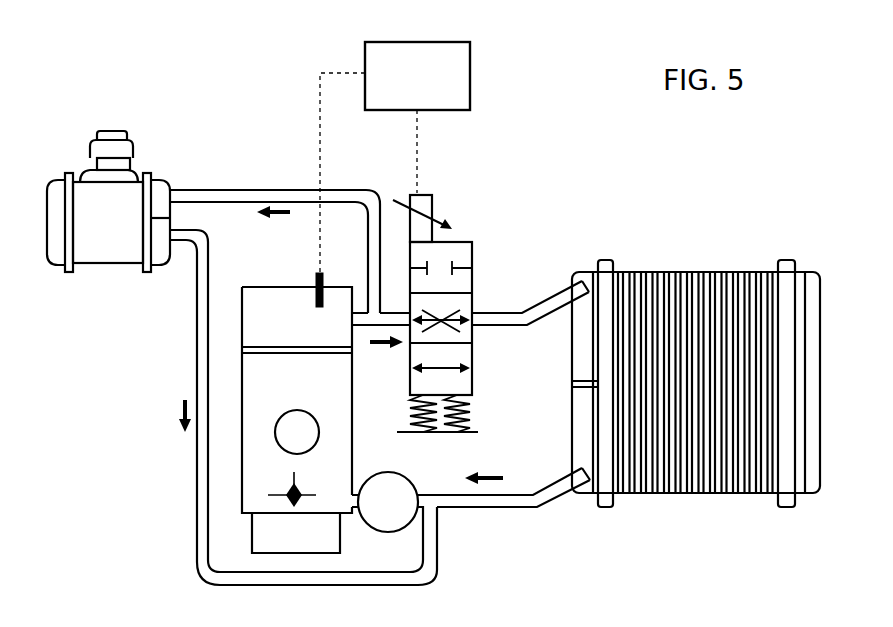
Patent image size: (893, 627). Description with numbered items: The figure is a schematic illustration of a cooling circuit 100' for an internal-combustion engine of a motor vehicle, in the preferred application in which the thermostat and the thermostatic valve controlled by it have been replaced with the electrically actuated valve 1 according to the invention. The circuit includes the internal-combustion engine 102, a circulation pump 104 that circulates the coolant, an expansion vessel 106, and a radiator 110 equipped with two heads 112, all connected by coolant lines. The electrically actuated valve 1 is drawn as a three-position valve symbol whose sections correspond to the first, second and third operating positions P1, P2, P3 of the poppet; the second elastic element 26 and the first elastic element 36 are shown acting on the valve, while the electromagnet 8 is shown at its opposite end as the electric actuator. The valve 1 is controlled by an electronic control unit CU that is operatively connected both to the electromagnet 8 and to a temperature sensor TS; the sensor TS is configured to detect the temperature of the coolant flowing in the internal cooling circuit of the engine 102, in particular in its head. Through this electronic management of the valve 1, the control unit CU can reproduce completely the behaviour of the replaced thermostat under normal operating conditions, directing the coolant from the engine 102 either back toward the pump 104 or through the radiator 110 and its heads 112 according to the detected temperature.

The cooling circuit 100' is at (558, 108).
The electrically actuated valve 1 is at (476, 306).
The electromagnet 8 is at (420, 196).
The second elastic element 26 is at (410, 414).
The first elastic element 36 is at (470, 412).
The internal-combustion engine 102 is at (312, 399).
The circulation pump 104 is at (378, 500).
The expansion vessel 106 is at (80, 172).
The radiator 110 is at (665, 318).
The heads 112 is at (803, 468).
The control unit CU is at (395, 157).
The temperature sensor TS is at (312, 278).
The first operating position interval P1 is at (474, 378).
The second operating position interval P2 is at (474, 330).
The third operating position interval P3 is at (474, 284).